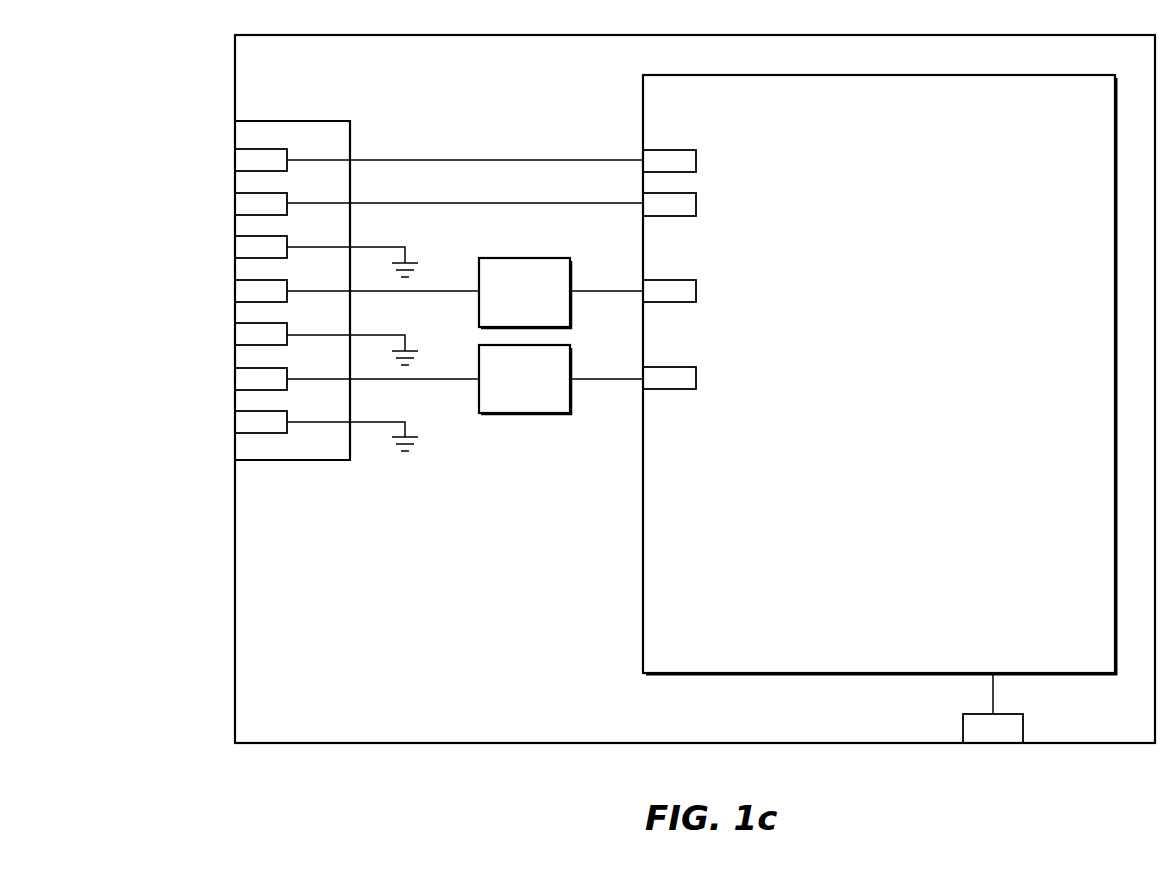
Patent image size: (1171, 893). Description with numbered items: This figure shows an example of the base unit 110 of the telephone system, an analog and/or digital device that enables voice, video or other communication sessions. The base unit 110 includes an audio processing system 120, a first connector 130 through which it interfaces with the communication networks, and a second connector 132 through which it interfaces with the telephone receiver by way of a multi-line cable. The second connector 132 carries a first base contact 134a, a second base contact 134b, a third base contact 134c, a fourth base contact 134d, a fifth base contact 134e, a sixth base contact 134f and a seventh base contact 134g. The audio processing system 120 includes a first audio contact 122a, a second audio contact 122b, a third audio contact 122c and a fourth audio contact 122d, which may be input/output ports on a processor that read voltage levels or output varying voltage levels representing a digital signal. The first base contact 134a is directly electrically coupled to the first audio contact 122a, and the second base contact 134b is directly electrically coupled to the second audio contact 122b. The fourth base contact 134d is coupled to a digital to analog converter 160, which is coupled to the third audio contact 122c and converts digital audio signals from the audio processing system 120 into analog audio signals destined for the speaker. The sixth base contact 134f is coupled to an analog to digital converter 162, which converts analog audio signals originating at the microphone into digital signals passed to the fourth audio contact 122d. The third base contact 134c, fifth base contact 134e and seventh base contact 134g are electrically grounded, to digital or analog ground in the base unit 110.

The base unit 110 is at (538, 67).
The audio processing system 120 is at (863, 131).
The first audio contact 122a is at (696, 160).
The second audio contact 122b is at (696, 203).
The third audio contact 122c is at (696, 291).
The fourth audio contact 122d is at (696, 378).
The first connector 130 is at (979, 745).
The second connector 132 is at (296, 121).
The first base contact 134a is at (236, 160).
The second base contact 134b is at (236, 203).
The third base contact 134c is at (236, 247).
The fourth base contact 134d is at (236, 291).
The fifth base contact 134e is at (236, 335).
The sixth base contact 134f is at (236, 379).
The seventh base contact 134g is at (236, 422).
The digital to analog converter (DAC) 160 is at (509, 316).
The analog to digital converter (ADC) 162 is at (509, 402).